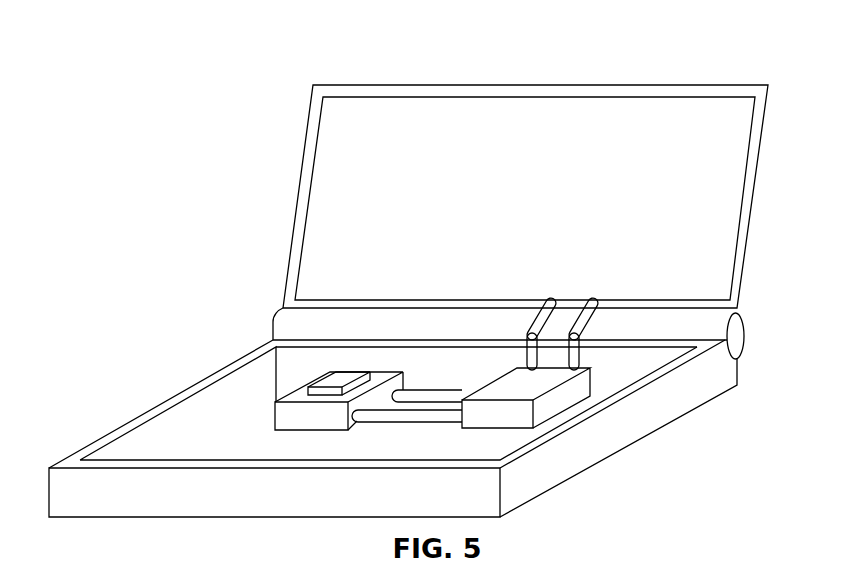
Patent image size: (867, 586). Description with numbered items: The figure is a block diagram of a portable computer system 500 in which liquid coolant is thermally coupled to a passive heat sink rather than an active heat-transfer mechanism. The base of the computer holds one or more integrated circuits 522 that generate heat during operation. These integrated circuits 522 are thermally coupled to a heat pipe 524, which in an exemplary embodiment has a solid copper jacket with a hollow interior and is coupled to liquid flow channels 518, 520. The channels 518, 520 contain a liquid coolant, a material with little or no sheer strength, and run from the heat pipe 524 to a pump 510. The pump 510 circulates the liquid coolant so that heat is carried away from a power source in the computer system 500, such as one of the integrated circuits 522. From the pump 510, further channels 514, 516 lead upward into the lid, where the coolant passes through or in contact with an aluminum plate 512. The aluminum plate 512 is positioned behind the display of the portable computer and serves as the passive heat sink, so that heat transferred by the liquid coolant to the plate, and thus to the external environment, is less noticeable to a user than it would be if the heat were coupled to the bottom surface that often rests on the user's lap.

The computer system 500 is at (613, 42).
The pump 510 is at (558, 403).
The aluminum plate 512 is at (310, 190).
The channel 514 is at (542, 315).
The channel 516 is at (592, 305).
The channel 518 is at (410, 418).
The channel 520 is at (428, 395).
The integrated circuit 522 is at (328, 382).
The heat pipe 524 is at (285, 412).